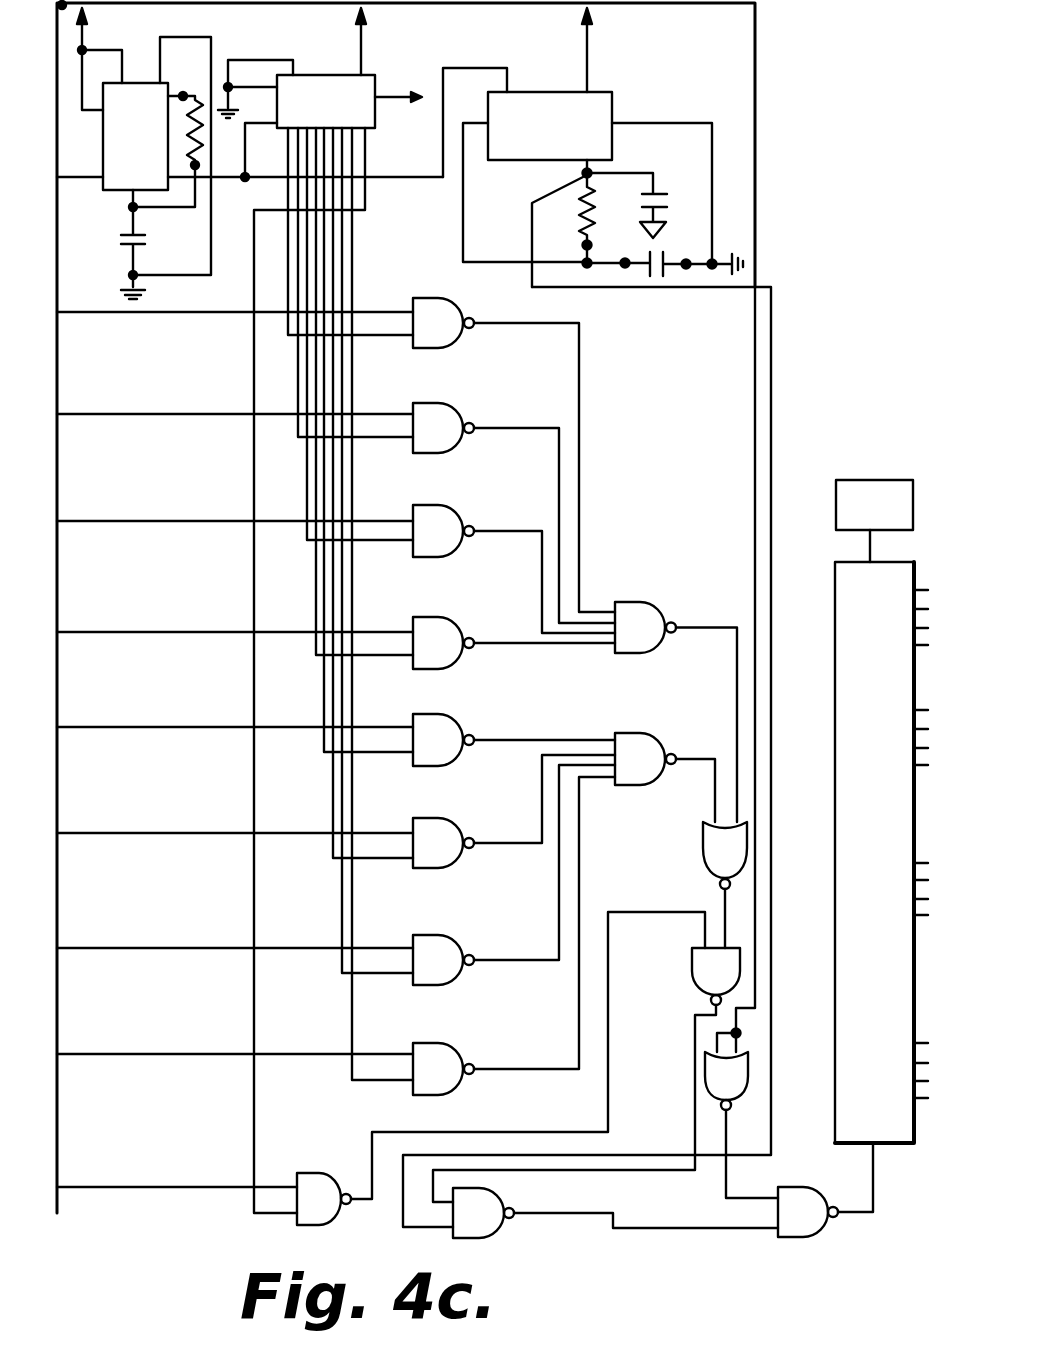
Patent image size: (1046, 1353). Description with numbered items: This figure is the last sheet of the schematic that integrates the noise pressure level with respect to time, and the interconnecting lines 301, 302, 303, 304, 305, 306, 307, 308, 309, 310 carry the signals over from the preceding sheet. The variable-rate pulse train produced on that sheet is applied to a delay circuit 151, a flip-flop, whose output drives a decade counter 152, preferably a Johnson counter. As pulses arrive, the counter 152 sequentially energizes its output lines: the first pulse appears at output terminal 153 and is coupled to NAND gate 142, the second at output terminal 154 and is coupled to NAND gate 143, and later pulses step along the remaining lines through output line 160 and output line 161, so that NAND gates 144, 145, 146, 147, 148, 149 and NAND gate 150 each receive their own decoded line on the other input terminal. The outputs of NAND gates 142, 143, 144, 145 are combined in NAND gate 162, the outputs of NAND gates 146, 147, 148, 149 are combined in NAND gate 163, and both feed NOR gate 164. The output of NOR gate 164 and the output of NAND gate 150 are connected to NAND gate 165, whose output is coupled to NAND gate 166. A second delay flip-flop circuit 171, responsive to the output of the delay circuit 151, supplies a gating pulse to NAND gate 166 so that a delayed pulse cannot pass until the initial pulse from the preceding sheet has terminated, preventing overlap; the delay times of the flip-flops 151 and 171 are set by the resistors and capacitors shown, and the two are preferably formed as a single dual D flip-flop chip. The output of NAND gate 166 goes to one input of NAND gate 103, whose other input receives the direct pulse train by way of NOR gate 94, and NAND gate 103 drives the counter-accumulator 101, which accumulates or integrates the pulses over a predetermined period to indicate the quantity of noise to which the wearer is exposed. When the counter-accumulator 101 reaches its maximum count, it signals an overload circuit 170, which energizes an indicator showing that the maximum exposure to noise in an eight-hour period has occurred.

The NOR gate 94 is at (718, 1083).
The counter-accumulator 101 is at (890, 860).
The NAND gate 103 is at (810, 1230).
The NAND gate 142 is at (440, 345).
The NAND gate 143 is at (440, 450).
The NAND gate 144 is at (440, 554).
The NAND gate 145 is at (440, 666).
The NAND gate 146 is at (436, 763).
The NAND gate 147 is at (440, 865).
The NAND gate 148 is at (440, 982).
The NAND gate 149 is at (440, 1092).
The NAND gate 150 is at (327, 1162).
The delay circuit 151 is at (158, 137).
The decade counter 152 is at (353, 117).
The output terminal 153 is at (292, 131).
The output terminal 154 is at (289, 141).
The output line 160 is at (358, 133).
The output line 161 is at (355, 131).
The NAND gate 162 is at (638, 614).
The NAND gate 163 is at (636, 745).
The NOR gate 164 is at (716, 858).
The NAND gate 165 is at (707, 982).
The NAND gate 166 is at (483, 1227).
The overload circuit 170 is at (898, 522).
The second delay flip-flop circuit 171 is at (573, 140).
The interconnecting line 301 is at (224, 5).
The interconnecting line 302 is at (80, 313).
The interconnecting line 303 is at (72, 414).
The interconnecting line 304 is at (72, 521).
The interconnecting line 305 is at (72, 632).
The interconnecting line 306 is at (72, 727).
The interconnecting line 307 is at (72, 833).
The interconnecting line 308 is at (72, 948).
The interconnecting line 309 is at (72, 1054).
The interconnecting line 310 is at (70, 1187).